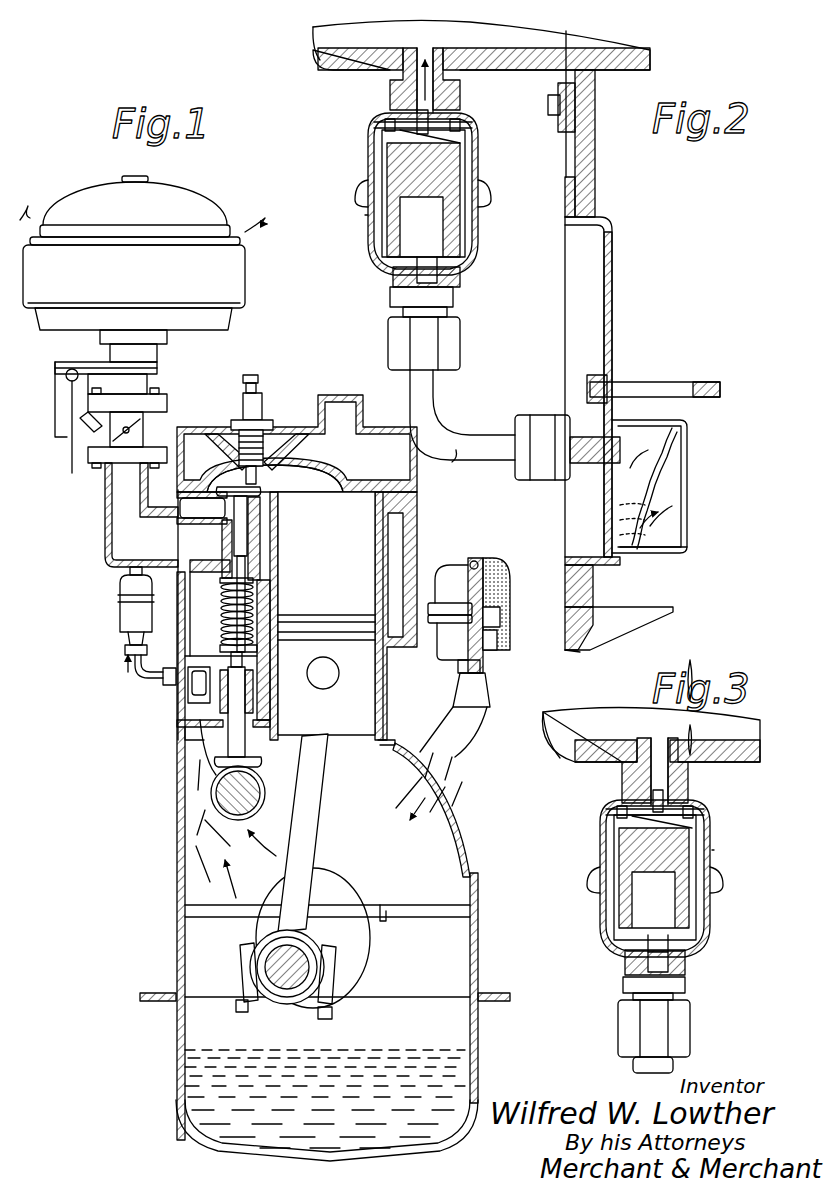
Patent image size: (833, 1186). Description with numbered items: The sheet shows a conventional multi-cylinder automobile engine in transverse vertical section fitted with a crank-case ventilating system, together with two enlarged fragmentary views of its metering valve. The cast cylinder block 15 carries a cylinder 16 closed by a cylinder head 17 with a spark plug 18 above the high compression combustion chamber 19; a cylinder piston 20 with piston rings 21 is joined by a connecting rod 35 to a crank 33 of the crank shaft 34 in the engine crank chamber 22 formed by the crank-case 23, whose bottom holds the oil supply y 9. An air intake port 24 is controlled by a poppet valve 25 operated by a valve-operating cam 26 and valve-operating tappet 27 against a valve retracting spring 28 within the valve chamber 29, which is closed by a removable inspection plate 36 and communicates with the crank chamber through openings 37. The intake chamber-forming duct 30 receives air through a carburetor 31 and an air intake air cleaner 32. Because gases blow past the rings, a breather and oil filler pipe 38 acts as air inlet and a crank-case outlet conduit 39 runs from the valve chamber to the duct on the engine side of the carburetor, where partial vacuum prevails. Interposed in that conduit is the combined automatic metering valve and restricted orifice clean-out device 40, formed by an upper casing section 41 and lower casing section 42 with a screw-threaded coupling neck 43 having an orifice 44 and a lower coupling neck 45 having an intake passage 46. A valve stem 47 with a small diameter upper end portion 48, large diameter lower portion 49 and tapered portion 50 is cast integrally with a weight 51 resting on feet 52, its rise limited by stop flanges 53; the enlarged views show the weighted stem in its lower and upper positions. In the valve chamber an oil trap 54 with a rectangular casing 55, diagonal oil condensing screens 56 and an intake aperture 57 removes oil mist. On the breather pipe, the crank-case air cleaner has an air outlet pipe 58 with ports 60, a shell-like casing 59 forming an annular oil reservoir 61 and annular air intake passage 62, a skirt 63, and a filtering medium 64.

In FIG. 1, the oil 9 is at (430, 1050).
In FIG. 1, the cast cylinder block 15 is at (393, 688).
In FIG. 1, the cylinder 16 is at (283, 541).
In FIG. 1, the cylinder head 17 is at (340, 393).
In FIG. 1, the spark plug 18 is at (258, 386).
In FIG. 1, the high compression combustion chamber 19 is at (292, 484).
In FIG. 1, the cylinder piston 20 is at (326, 613).
In FIG. 1, the piston rings 21 is at (315, 636).
In FIG. 1, the engine crank chamber 22 is at (417, 882).
In FIG. 1, the crank-case 23 is at (480, 955).
In FIG. 2, the crank-case 23 is at (566, 651).
In FIG. 1, the air intake port 24 is at (203, 615).
In FIG. 2, the air intake port 24 is at (596, 46).
In FIG. 3, the air intake port 24 is at (715, 738).
In FIG. 1, the poppet valve 25 is at (262, 493).
In FIG. 1, the valve-operating cam 26 is at (252, 812).
In FIG. 1, the valve-operating tappet 27 is at (249, 746).
In FIG. 1, the valve retracting spring 28 is at (254, 598).
In FIG. 1, the valve chamber 29 is at (200, 632).
In FIG. 2, the valve chamber 29 is at (632, 355).
In FIG. 1, the intake chamber-forming duct 30 is at (104, 516).
In FIG. 2, the intake chamber-forming duct 30 is at (313, 38).
In FIG. 3, the intake chamber-forming duct 30 is at (547, 737).
In FIG. 1, the carburetor 31 is at (158, 374).
In FIG. 1, the air intake air cleaner 32 is at (237, 280).
In FIG. 1, the crank 33 is at (282, 988).
In FIG. 1, the crank shaft 34 is at (352, 932).
In FIG. 1, the connecting rod 35 is at (236, 829).
In FIG. 1, the removable inspection plate 36 is at (180, 634).
In FIG. 2, the removable inspection plate 36 is at (612, 262).
In FIG. 1, the openings 37 is at (182, 740).
In FIG. 2, the openings 37 is at (636, 614).
In FIG. 1, the breather and oil filler pipe 38 is at (487, 722).
In FIG. 1, the crank-case outlet conduit 39 is at (128, 677).
In FIG. 2, the crank-case outlet conduit 39 is at (452, 452).
In FIG. 1, the combined automatic metering valve and restricted orifice clean-out device 40 is at (118, 618).
In FIG. 2, the combined automatic metering valve and restricted orifice clean-out device 40 is at (366, 228).
In FIG. 3, the combined automatic metering valve and restricted orifice clean-out device 40 is at (716, 850).
In FIG. 2, the upper casing section 41 is at (370, 157).
In FIG. 3, the upper casing section 41 is at (712, 826).
In FIG. 2, the lower casing section 42 is at (472, 235).
In FIG. 3, the lower casing section 42 is at (706, 932).
In FIG. 2, the coupling neck 43 is at (455, 90).
In FIG. 3, the coupling neck 43 is at (688, 786).
In FIG. 2, the orifice 44 is at (430, 70).
In FIG. 3, the orifice 44 is at (668, 740).
In FIG. 2, the coupling neck 45 is at (453, 297).
In FIG. 3, the coupling neck 45 is at (685, 984).
In FIG. 2, the intake passage 46 is at (437, 276).
In FIG. 3, the intake passage 46 is at (668, 962).
In FIG. 2, the valve stem 47 is at (420, 62).
In FIG. 3, the valve stem 47 is at (648, 775).
In FIG. 2, the small diameter upper end portion 48 is at (455, 141).
In FIG. 3, the small diameter upper end portion 48 is at (662, 800).
In FIG. 2, the large diameter lower portion 49 is at (430, 140).
In FIG. 3, the large diameter lower portion 49 is at (692, 820).
In FIG. 2, the tapered portion 50 is at (385, 136).
In FIG. 3, the tapered portion 50 is at (606, 826).
In FIG. 2, the weight 51 is at (425, 166).
In FIG. 3, the weight 51 is at (685, 866).
In FIG. 2, the feet 52 is at (395, 272).
In FIG. 3, the feet 52 is at (640, 940).
In FIG. 2, the stop flanges 53 is at (395, 121).
In FIG. 1, the oil trap 54 is at (187, 679).
In FIG. 2, the oil trap 54 is at (690, 458).
In FIG. 1, the rectangular casing 55 is at (187, 694).
In FIG. 2, the rectangular casing 55 is at (690, 497).
In FIG. 2, the oil condensing screens 56 is at (652, 488).
In FIG. 2, the intake aperture 57 is at (690, 530).
In FIG. 1, the air outlet pipe 58 is at (457, 668).
In FIG. 1, the shell-like casing 59 is at (514, 582).
In FIG. 1, the ports 60 is at (470, 565).
In FIG. 1, the annular oil reservoir 61 is at (498, 646).
In FIG. 1, the annular air intake passage 62 is at (486, 658).
In FIG. 1, the skirt 63 is at (500, 614).
In FIG. 1, the filtering medium 64 is at (508, 593).